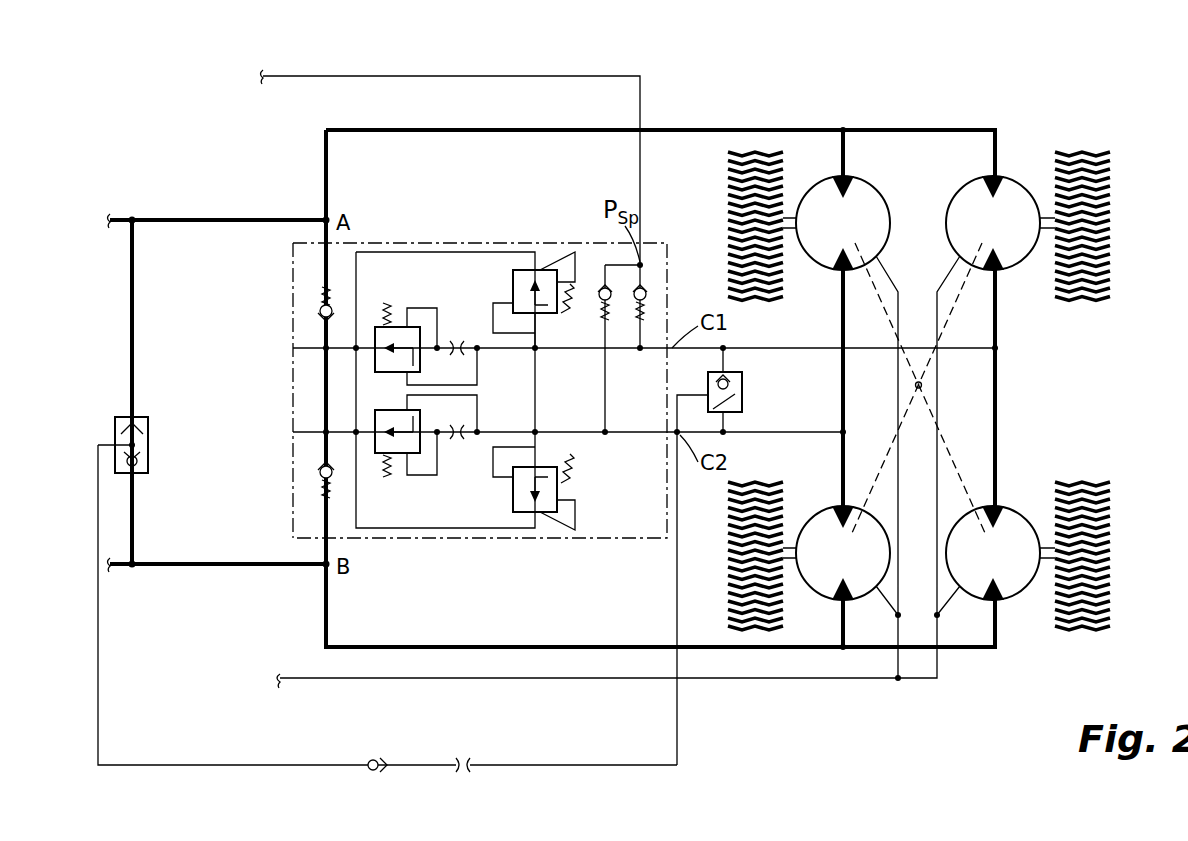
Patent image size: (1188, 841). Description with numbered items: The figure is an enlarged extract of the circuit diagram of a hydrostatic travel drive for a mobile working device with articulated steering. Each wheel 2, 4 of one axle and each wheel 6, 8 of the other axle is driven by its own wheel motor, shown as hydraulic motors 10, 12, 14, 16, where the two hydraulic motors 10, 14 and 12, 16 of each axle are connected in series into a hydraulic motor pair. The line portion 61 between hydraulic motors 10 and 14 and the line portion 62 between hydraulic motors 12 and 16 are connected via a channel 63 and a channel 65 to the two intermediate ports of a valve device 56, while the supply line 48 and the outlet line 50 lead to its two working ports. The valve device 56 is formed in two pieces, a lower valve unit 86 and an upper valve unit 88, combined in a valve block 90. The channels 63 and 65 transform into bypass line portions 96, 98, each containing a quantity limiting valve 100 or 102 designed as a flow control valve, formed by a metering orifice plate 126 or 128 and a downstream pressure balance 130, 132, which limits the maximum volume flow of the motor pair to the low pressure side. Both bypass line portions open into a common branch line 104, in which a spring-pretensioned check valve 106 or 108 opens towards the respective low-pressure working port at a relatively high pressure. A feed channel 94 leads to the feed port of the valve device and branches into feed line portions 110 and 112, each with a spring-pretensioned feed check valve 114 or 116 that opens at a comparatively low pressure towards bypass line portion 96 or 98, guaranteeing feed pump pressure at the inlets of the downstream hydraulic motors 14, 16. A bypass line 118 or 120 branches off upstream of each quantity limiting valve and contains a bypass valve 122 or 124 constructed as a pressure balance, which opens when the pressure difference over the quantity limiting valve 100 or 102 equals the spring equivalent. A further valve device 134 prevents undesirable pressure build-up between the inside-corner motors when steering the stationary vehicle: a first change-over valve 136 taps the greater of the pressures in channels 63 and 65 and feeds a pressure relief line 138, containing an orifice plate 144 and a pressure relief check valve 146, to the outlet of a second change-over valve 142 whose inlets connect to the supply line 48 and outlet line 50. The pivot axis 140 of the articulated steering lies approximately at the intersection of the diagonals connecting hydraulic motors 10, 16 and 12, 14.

The wheel 2 is at (780, 272).
The wheel 4 is at (1112, 234).
The wheel 6 is at (740, 562).
The wheel 8 is at (1103, 555).
The hydraulic motor 10 is at (831, 234).
The hydraulic motor 12 is at (981, 234).
The hydraulic motor 14 is at (831, 564).
The hydraulic motor 16 is at (981, 564).
The supply line 48 is at (160, 220).
The outlet line 50 is at (193, 566).
The valve device 56 is at (498, 540).
The line portion 61 is at (845, 330).
The line portion 62 is at (997, 452).
The channel 63 is at (826, 348).
The channel 65 is at (800, 434).
The lower valve unit 86 is at (272, 476).
The upper valve unit 88 is at (272, 331).
The valve block 90 is at (293, 401).
The feed channel 94 is at (498, 76).
The bypass line portion 96 is at (627, 437).
The bypass line portion 98 is at (540, 352).
The quantity limiting valve 100 is at (371, 518).
The quantity limiting valve 102 is at (381, 270).
The branch line 104 is at (323, 419).
The check valve 106 is at (319, 478).
The check valve 108 is at (318, 305).
The feed line portion 110 is at (606, 262).
The feed line portion 112 is at (646, 284).
The feed check valve 114 is at (605, 322).
The feed check valve 116 is at (652, 300).
The bypass line 118 is at (356, 515).
The bypass line 120 is at (354, 270).
The bypass valve 122 is at (553, 513).
The bypass valve 124 is at (493, 300).
The metering orifice plate 126 is at (460, 441).
The metering orifice plate 128 is at (452, 340).
The pressure balance 130 is at (401, 455).
The pressure balance 132 is at (375, 360).
The valve device 134 is at (604, 770).
The first change-over valve 136 is at (742, 395).
The pressure relief line 138 is at (680, 742).
The pivot axis 140 is at (921, 390).
The second change-over valve 142 is at (112, 421).
The orifice plate 144 is at (463, 773).
The pressure relief check valve 146 is at (370, 771).